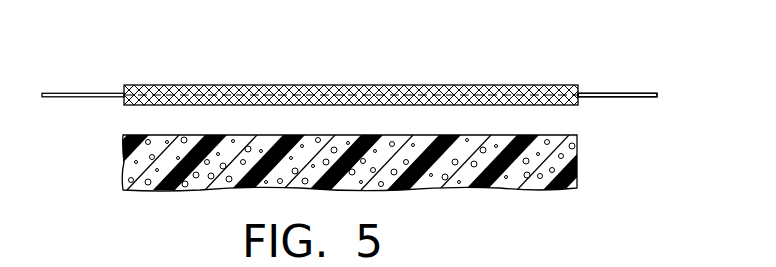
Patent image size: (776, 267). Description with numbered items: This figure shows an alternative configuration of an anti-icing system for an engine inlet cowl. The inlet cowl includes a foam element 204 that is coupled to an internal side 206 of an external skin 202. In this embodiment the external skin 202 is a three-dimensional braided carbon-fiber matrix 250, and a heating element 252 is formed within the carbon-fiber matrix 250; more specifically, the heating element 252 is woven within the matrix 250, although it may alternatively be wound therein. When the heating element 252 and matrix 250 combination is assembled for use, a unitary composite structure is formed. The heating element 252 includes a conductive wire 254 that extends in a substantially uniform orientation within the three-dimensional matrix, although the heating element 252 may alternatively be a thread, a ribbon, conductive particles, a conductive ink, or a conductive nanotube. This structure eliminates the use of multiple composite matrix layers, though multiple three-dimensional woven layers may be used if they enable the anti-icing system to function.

The three-dimensional braided carbon-fiber matrix 250 is at (232, 75).
The internal side 206 is at (163, 104).
The heating element 252 is at (625, 89).
The conductive wire 254 is at (592, 99).
The external skin 202 is at (401, 177).
The foam element 204 is at (156, 187).